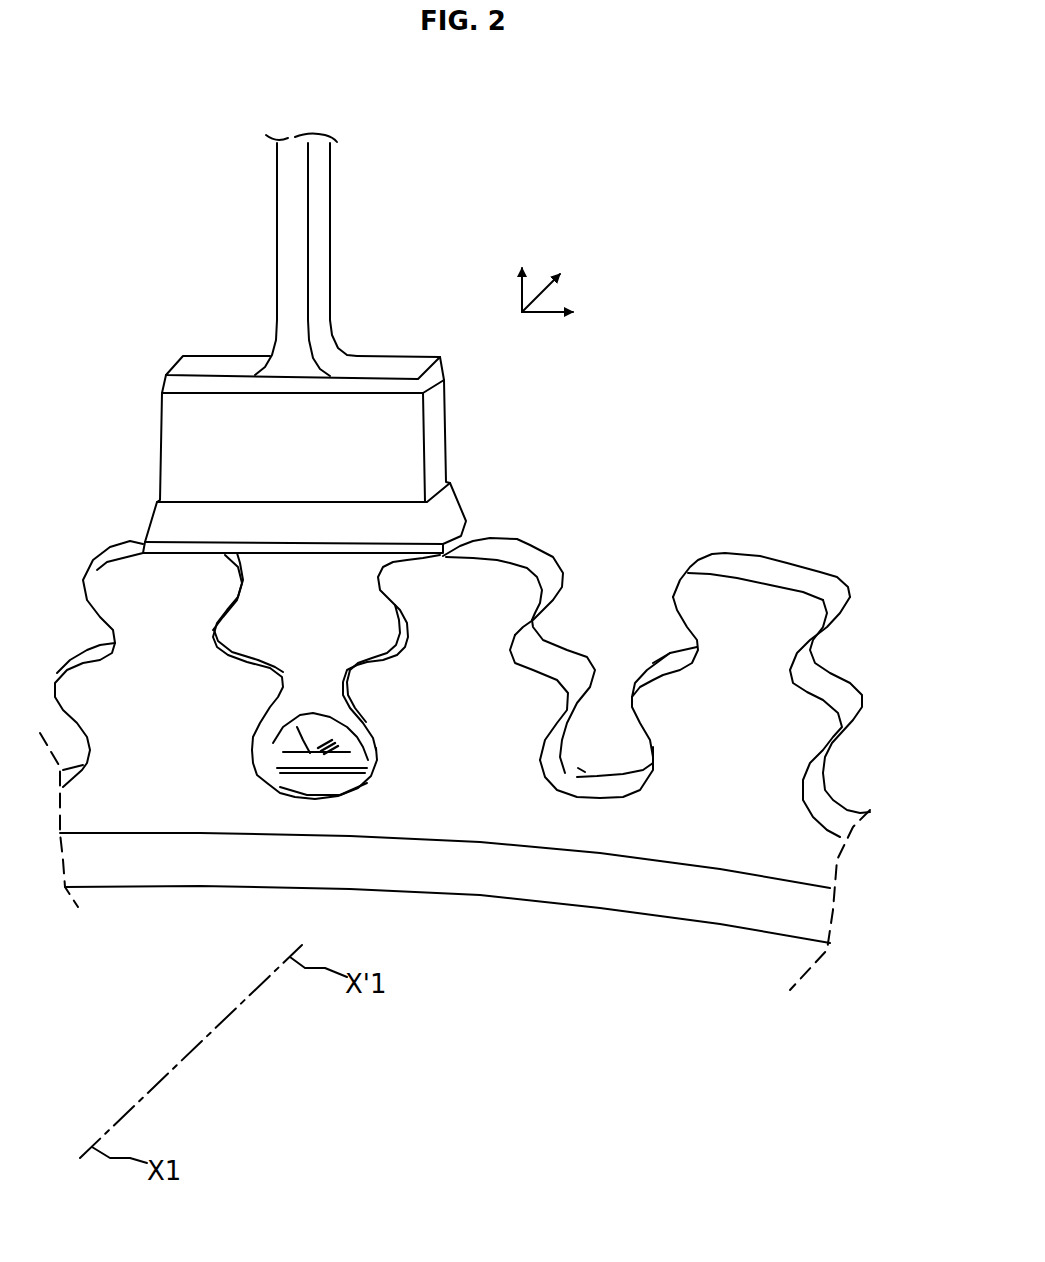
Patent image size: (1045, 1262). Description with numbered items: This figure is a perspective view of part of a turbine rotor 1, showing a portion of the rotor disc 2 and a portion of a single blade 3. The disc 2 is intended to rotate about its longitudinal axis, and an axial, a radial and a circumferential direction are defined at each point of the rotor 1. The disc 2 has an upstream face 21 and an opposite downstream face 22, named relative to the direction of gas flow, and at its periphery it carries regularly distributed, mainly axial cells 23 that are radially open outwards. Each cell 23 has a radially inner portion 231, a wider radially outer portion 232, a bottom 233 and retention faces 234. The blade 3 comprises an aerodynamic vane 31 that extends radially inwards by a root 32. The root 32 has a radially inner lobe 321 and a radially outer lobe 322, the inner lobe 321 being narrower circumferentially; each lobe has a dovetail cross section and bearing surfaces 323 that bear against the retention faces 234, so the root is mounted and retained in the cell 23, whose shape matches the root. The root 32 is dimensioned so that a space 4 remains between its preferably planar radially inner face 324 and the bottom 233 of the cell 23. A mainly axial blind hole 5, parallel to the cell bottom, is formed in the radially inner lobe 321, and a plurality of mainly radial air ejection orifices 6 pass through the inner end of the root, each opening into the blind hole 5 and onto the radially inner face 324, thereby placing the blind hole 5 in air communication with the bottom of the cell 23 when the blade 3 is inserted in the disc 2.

The turbine rotor 1 is at (600, 296).
The rotor disc 2 is at (455, 734).
The upstream face 21 is at (752, 707).
The downstream face 22 is at (792, 554).
The cell 23 is at (577, 557).
The radially inner portion 231 is at (630, 754).
The radially outer portion 232 is at (630, 624).
The bottom 233 is at (559, 848).
The retention face 234 is at (722, 692).
The blade 3 is at (304, 366).
The aerodynamic vane 31 is at (289, 254).
The root 32 is at (253, 848).
The radially inner lobe 321 is at (450, 627).
The radially outer lobe 322 is at (343, 639).
The bearing surface 323 is at (285, 640).
The radially inner face 324 is at (330, 844).
The space 4 is at (312, 859).
The blind hole 5 is at (245, 838).
The air ejection orifice 6 is at (376, 837).